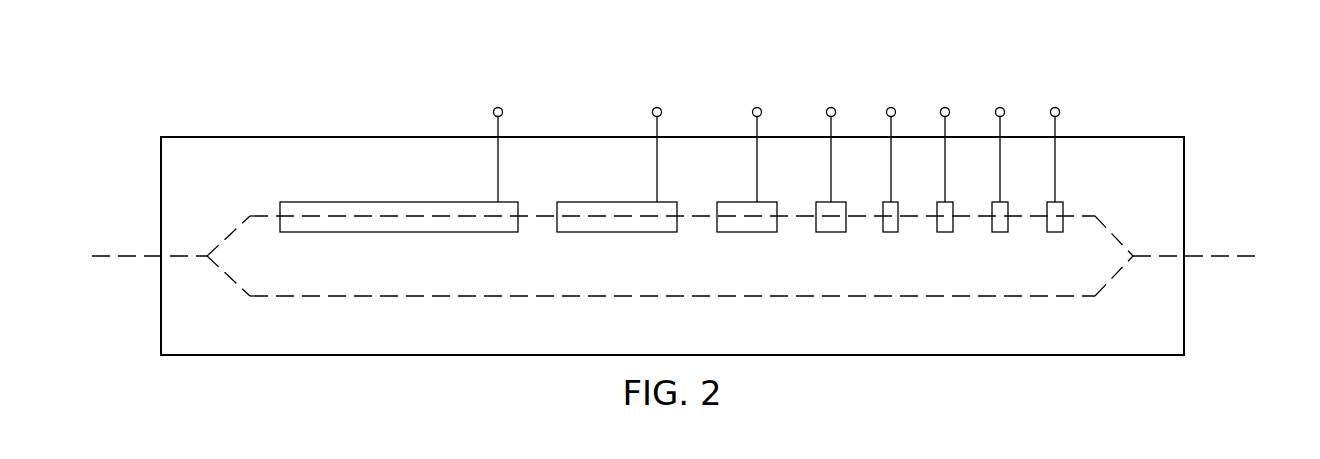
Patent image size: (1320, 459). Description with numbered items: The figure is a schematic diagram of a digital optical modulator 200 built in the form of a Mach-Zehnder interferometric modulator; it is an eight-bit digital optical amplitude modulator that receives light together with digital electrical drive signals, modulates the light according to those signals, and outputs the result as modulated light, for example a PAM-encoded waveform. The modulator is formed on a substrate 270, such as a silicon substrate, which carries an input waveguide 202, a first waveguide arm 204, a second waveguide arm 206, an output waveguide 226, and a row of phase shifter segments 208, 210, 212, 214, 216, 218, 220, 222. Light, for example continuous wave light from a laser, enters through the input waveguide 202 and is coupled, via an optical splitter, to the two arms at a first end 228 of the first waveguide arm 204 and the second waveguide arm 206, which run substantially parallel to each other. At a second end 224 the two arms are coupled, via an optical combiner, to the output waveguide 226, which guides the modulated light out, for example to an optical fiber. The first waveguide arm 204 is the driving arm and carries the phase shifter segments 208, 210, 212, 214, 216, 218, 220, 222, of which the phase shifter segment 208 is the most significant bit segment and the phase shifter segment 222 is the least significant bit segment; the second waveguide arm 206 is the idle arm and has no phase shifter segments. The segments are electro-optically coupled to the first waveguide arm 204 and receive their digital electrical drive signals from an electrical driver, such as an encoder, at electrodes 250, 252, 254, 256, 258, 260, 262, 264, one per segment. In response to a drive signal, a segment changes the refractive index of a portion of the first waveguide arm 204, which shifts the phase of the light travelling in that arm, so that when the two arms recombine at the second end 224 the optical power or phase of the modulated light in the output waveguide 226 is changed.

The digital optical modulator 200 is at (238, 79).
The input waveguide 202 is at (137, 258).
The first waveguide arm 204 is at (255, 215).
The second waveguide arm 206 is at (257, 297).
The phase shifter segment 208 is at (398, 201).
The phase shifter segment 210 is at (617, 201).
The phase shifter segment 212 is at (737, 201).
The phase shifter segment 214 is at (838, 200).
The phase shifter segment 216 is at (893, 200).
The phase shifter segment 218 is at (947, 200).
The phase shifter segment 220 is at (1003, 200).
The phase shifter segment 222 is at (1058, 200).
The second end 224 is at (1135, 254).
The output waveguide 226 is at (1207, 258).
The first end 228 is at (208, 255).
The electrode 250 is at (494, 108).
The electrode 252 is at (653, 108).
The electrode 254 is at (760, 108).
The electrode 256 is at (835, 109).
The electrode 258 is at (894, 109).
The electrode 260 is at (948, 109).
The electrode 262 is at (1003, 109).
The electrode 264 is at (1058, 109).
The substrate 270 is at (332, 128).